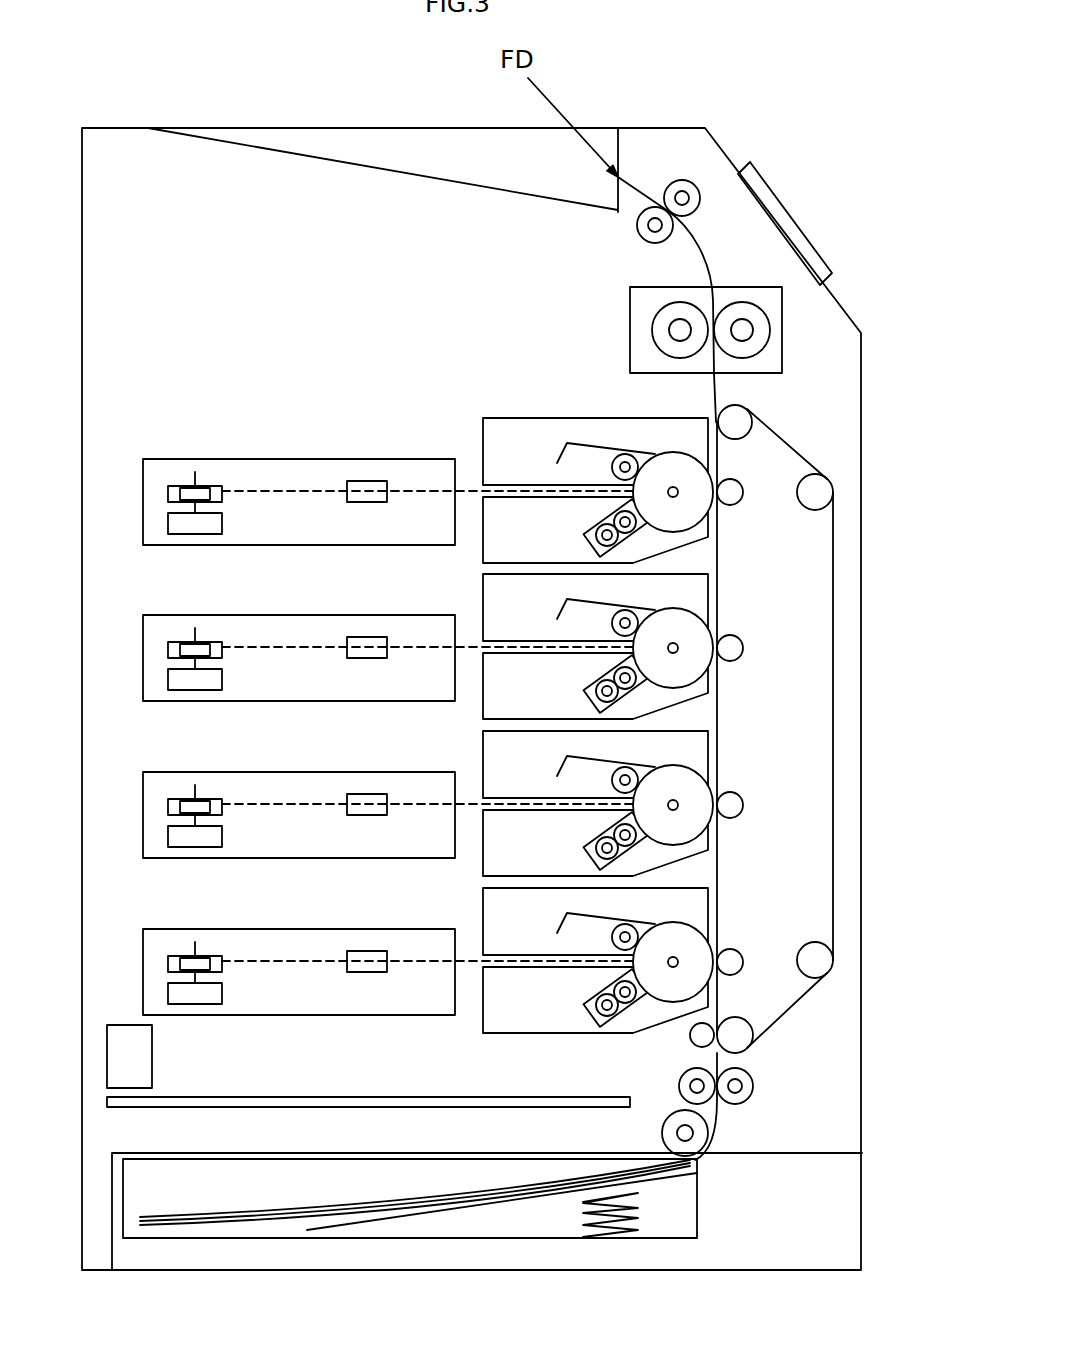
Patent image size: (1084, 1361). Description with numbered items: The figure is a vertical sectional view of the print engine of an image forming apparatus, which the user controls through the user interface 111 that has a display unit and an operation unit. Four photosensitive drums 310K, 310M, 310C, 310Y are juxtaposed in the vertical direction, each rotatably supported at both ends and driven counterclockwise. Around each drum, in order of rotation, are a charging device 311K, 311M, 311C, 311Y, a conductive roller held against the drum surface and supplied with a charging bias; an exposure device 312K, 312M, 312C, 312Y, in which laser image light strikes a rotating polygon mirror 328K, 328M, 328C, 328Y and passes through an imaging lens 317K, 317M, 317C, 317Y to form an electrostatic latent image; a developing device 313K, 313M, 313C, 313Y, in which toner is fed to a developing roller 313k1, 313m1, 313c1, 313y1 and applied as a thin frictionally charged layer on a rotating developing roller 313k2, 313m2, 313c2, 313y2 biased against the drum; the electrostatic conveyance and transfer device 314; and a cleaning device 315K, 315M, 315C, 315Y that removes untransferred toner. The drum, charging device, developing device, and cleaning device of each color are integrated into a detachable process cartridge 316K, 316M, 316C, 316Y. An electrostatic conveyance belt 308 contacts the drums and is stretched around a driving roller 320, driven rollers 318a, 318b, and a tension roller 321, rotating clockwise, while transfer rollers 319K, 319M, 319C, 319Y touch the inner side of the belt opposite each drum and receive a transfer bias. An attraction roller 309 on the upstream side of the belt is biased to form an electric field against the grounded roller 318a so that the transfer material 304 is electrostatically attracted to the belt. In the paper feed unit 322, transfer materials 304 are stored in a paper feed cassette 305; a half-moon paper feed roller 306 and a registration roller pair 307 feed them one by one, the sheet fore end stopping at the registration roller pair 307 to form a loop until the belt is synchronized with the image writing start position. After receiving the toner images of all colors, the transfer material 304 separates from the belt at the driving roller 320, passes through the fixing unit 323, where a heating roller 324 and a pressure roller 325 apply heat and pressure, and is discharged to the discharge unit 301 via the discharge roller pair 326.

The discharge unit 301 is at (356, 128).
The user interface 111 is at (790, 210).
The transfer material 304 is at (205, 1217).
The paper feed cassette 305 is at (532, 1225).
The paper feed roller 306 is at (697, 1147).
The registration roller pair 307 is at (735, 1104).
The electrostatic conveyance belt 308 is at (788, 1016).
The attraction roller 309 is at (690, 1036).
The photosensitive drum 310K is at (705, 477).
The photosensitive drum 310M is at (703, 630).
The photosensitive drum 310C is at (703, 787).
The photosensitive drum 310Y is at (703, 947).
The charging device 311K is at (612, 462).
The charging device 311M is at (640, 608).
The charging device 311C is at (640, 765).
The charging device 311Y is at (640, 922).
The exposure device 312K is at (245, 459).
The exposure device 312M is at (245, 615).
The exposure device 312C is at (245, 772).
The exposure device 312Y is at (245, 929).
The developing device 313K is at (610, 510).
The developing device 313M is at (610, 665).
The developing device 313C is at (610, 822).
The developing device 313Y is at (610, 979).
The developing roller 313k1 is at (603, 555).
The developing roller 313m1 is at (603, 710).
The developing roller 313c1 is at (603, 867).
The developing roller 313y1 is at (603, 1024).
The developing roller 313k2 is at (633, 527).
The developing roller 313m2 is at (633, 684).
The developing roller 313c2 is at (633, 841).
The developing roller 313y2 is at (625, 1018).
The electrostatic conveyance and transfer device 314 is at (822, 828).
The cleaning device 315K is at (562, 449).
The cleaning device 315M is at (560, 612).
The cleaning device 315C is at (560, 769).
The cleaning device 315Y is at (560, 926).
The process cartridge 316K is at (483, 443).
The process cartridge 316M is at (483, 607).
The process cartridge 316C is at (483, 764).
The process cartridge 316Y is at (483, 921).
The imaging lens 317K is at (365, 481).
The imaging lens 317M is at (365, 637).
The imaging lens 317C is at (365, 794).
The imaging lens 317Y is at (365, 951).
The driven roller 318a is at (742, 1053).
The driven roller 318b is at (823, 493).
The transfer roller 319K is at (767, 514).
The transfer roller 319M is at (767, 672).
The transfer roller 319C is at (767, 829).
The transfer roller 319Y is at (760, 990).
The driving roller 320 is at (740, 418).
The tension roller 321 is at (830, 948).
The paper feed unit 322 is at (243, 1153).
The fixing unit 323 is at (630, 340).
The heating roller 324 is at (660, 306).
The pressure roller 325 is at (745, 302).
The discharge roller pair 326 is at (690, 187).
The polygon mirror 328K is at (186, 486).
The polygon mirror 328M is at (186, 642).
The polygon mirror 328C is at (186, 799).
The polygon mirror 328Y is at (186, 956).